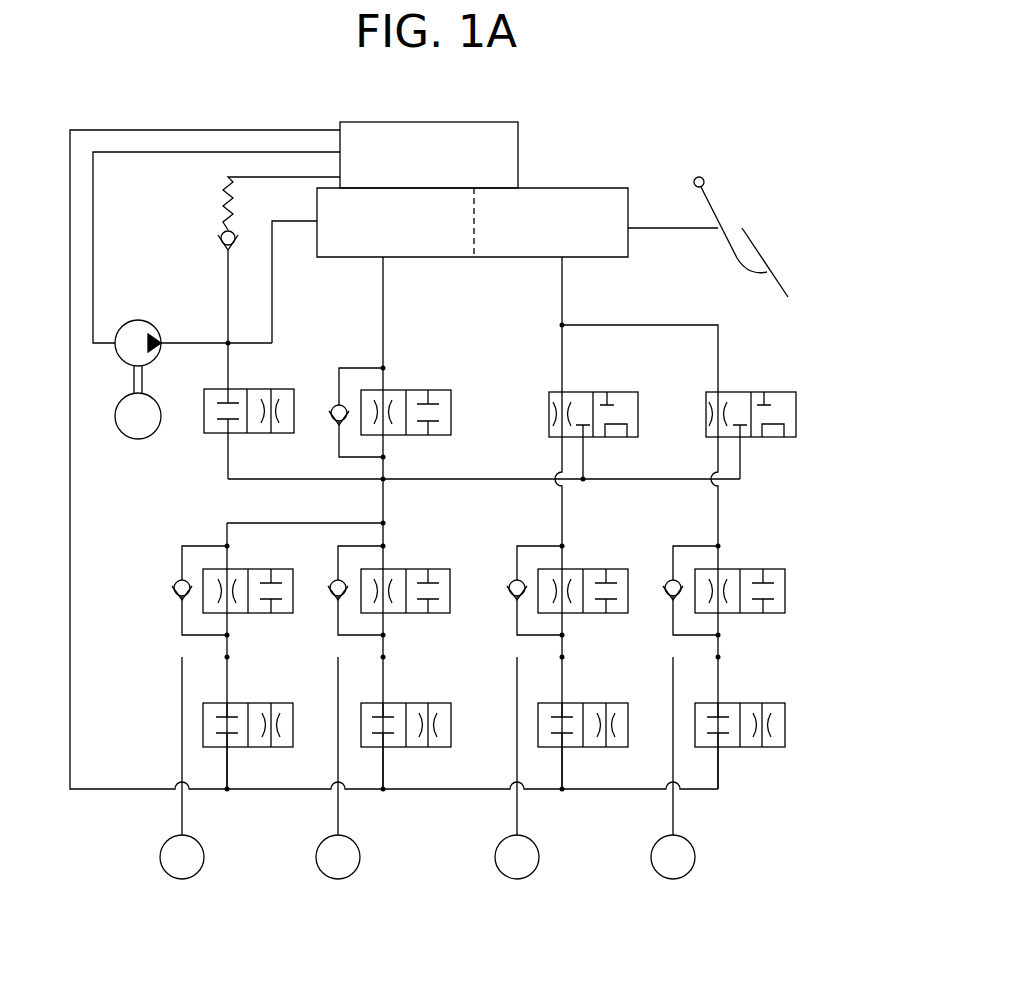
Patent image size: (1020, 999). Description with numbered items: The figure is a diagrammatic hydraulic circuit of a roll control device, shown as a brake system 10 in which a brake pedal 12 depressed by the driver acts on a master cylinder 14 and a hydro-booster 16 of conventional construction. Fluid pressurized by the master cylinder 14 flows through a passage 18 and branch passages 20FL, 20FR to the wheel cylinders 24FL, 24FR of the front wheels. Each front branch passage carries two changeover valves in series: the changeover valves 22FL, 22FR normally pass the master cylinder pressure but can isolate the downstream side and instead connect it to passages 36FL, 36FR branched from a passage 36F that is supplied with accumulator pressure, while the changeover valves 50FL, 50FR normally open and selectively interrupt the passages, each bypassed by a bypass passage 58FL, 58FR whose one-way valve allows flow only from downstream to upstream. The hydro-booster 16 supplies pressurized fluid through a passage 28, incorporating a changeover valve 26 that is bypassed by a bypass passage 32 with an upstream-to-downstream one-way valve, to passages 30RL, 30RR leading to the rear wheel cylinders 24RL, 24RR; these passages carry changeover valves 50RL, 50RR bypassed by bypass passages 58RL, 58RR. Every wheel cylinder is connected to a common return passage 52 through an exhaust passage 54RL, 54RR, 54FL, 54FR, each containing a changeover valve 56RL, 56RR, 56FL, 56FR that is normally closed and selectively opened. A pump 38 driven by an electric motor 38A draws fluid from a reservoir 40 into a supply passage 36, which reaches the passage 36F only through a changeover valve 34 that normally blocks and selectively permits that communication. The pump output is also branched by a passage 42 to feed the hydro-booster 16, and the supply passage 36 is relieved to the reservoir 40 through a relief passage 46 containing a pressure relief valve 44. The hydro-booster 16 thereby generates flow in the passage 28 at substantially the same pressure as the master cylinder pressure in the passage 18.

The brake system 10 is at (694, 149).
The brake pedal 12 is at (755, 247).
The master cylinder 14 is at (551, 222).
The hydro-booster 16 is at (395, 222).
The passage 18 is at (562, 302).
The branch passage 20FL is at (560, 352).
The branch passage 20FR is at (660, 325).
The changeover valve 22FL is at (623, 391).
The changeover valve 22FR is at (737, 392).
The wheel cylinder 24RL is at (182, 879).
The wheel cylinder 24RR is at (338, 879).
The wheel cylinder 24FL is at (517, 879).
The wheel cylinder 24FR is at (673, 879).
The changeover valve 26 is at (417, 389).
The passage 28 is at (383, 299).
The passage 30RL is at (290, 522).
The passage 30RR is at (383, 649).
The bypass passage 32 is at (337, 378).
The changeover valve 34 is at (213, 436).
The supply passage 36 is at (228, 366).
The passage 36F is at (480, 478).
The passage 36FL is at (583, 459).
The passage 36FR is at (740, 462).
The pump 38 is at (136, 320).
The electric motor 38A is at (138, 440).
The reservoir 40 is at (518, 148).
The passage 42 is at (272, 275).
The pressure relief valve 44 is at (221, 237).
The relief passage 46 is at (230, 317).
The changeover valve 50RL is at (238, 568).
The changeover valve 50RR is at (393, 569).
The changeover valve 50FL is at (572, 569).
The changeover valve 50FR is at (726, 569).
The return passage 52 is at (70, 706).
The exhaust passage 54RL is at (227, 681).
The exhaust passage 54RR is at (383, 681).
The exhaust passage 54FL is at (562, 681).
The exhaust passage 54FR is at (718, 681).
The changeover valve 56RL is at (235, 747).
The changeover valve 56RR is at (391, 747).
The changeover valve 56FL is at (568, 748).
The changeover valve 56FR is at (725, 748).
The bypass passage 58RL is at (182, 561).
The bypass passage 58RR is at (338, 629).
The bypass passage 58FL is at (533, 545).
The bypass passage 58FR is at (685, 547).